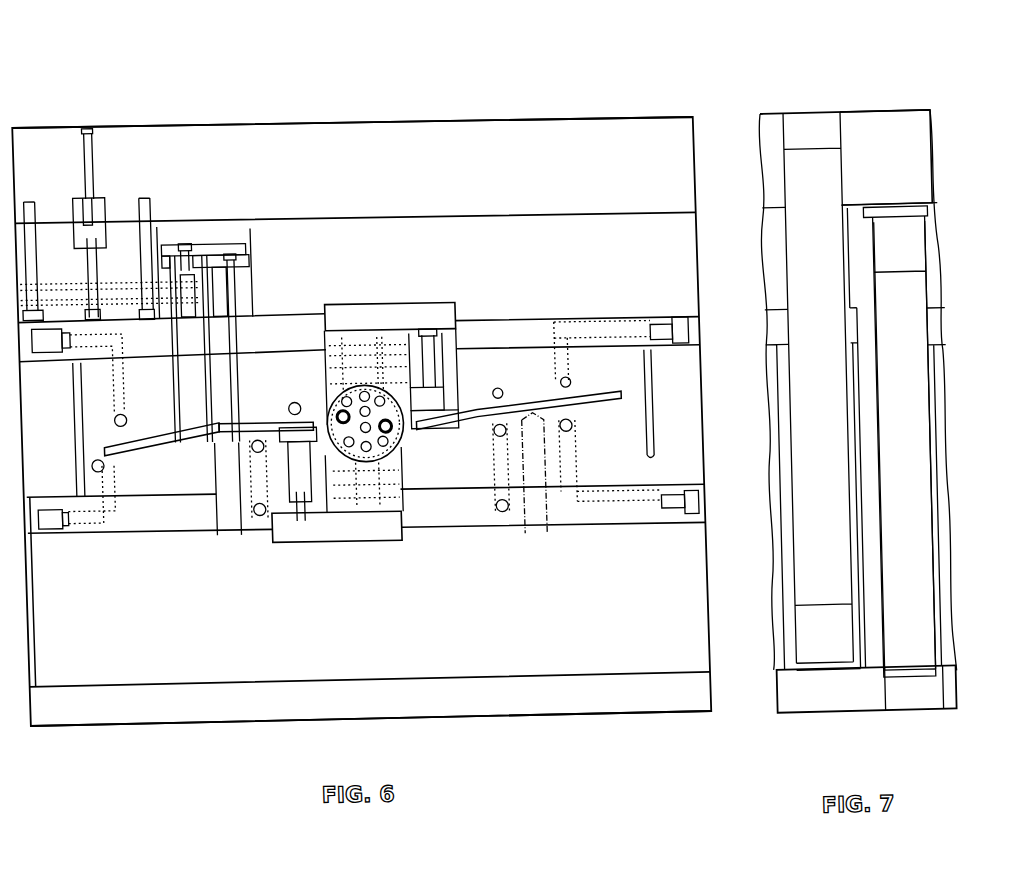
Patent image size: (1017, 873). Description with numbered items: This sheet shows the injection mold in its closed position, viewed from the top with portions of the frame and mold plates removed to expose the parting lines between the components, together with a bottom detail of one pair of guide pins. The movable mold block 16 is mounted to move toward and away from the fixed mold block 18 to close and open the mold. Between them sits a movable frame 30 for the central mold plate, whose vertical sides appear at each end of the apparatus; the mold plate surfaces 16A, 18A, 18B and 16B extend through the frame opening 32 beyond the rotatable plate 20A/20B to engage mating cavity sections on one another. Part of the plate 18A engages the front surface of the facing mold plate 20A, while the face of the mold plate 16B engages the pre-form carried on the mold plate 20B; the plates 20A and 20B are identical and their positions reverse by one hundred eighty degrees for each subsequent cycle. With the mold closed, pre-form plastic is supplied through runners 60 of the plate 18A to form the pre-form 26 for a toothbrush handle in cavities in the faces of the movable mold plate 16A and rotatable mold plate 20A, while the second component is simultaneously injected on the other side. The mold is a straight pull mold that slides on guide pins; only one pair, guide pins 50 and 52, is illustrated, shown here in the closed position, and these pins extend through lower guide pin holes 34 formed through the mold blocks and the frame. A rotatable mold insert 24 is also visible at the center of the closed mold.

In FIG. 6, the movable mold block 16 is at (380, 639).
In FIG. 7, the movable mold block 16 is at (840, 712).
In FIG. 6, the mold plate surface 16A is at (176, 490).
In FIG. 6, the mold plate surface 16B is at (626, 450).
In FIG. 6, the fixed mold block 18 is at (392, 196).
In FIG. 7, the fixed mold block 18 is at (920, 183).
In FIG. 6, the mold plate surface 18A is at (146, 412).
In FIG. 6, the mold plate surface 18B is at (578, 355).
In FIG. 6, the rotatable mold plate 20A is at (248, 520).
In FIG. 6, the rotatable mold plate 20B is at (446, 356).
In FIG. 6, the circular insert plate 24 is at (386, 445).
In FIG. 6, the pre-form 26 is at (252, 418).
In FIG. 6, the movable frame 30 is at (532, 335).
In FIG. 6, the frame opening 32 is at (641, 469).
In FIG. 7, the lower guide pin holes 34 is at (923, 389).
In FIG. 7, the guide pin 50 is at (800, 162).
In FIG. 7, the guide pin 52 is at (905, 659).
In FIG. 6, the runners 60 is at (237, 391).